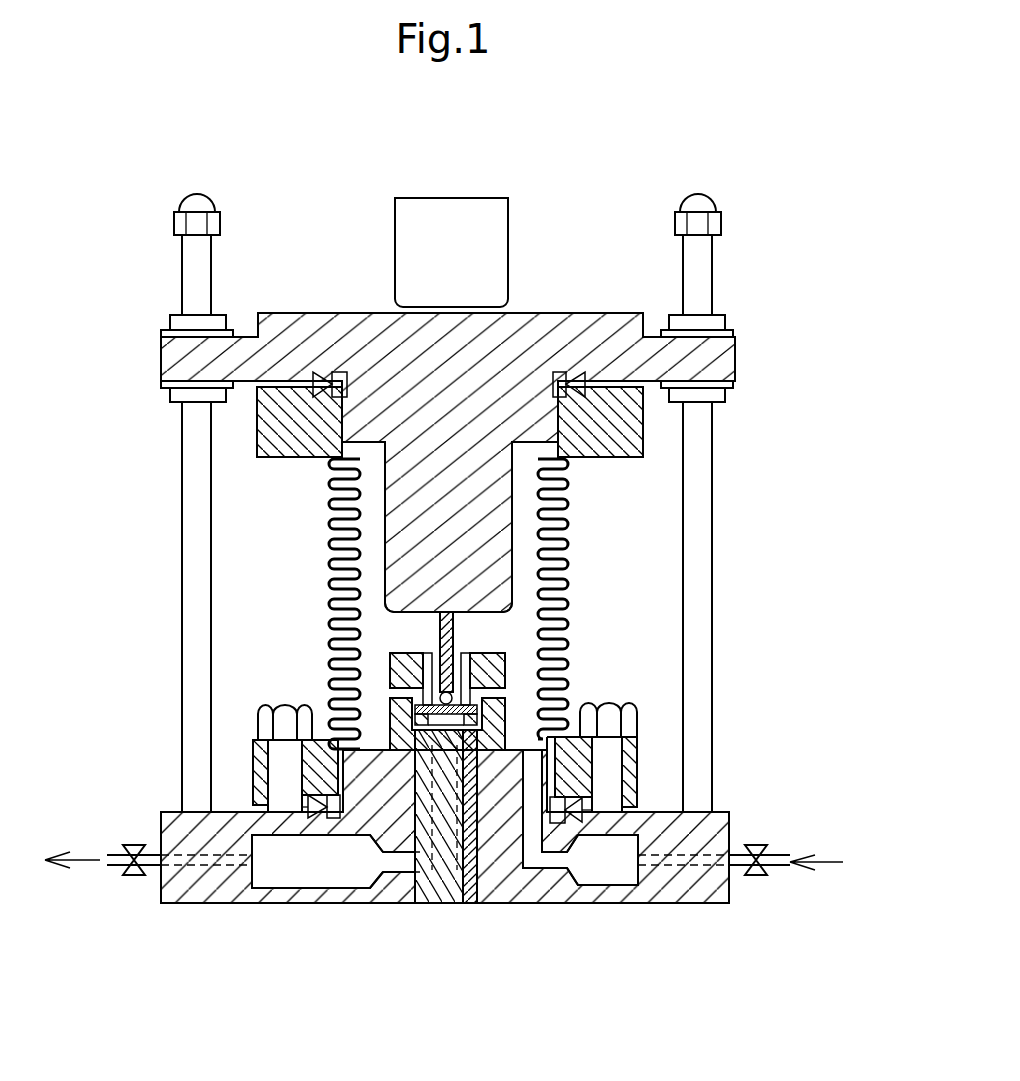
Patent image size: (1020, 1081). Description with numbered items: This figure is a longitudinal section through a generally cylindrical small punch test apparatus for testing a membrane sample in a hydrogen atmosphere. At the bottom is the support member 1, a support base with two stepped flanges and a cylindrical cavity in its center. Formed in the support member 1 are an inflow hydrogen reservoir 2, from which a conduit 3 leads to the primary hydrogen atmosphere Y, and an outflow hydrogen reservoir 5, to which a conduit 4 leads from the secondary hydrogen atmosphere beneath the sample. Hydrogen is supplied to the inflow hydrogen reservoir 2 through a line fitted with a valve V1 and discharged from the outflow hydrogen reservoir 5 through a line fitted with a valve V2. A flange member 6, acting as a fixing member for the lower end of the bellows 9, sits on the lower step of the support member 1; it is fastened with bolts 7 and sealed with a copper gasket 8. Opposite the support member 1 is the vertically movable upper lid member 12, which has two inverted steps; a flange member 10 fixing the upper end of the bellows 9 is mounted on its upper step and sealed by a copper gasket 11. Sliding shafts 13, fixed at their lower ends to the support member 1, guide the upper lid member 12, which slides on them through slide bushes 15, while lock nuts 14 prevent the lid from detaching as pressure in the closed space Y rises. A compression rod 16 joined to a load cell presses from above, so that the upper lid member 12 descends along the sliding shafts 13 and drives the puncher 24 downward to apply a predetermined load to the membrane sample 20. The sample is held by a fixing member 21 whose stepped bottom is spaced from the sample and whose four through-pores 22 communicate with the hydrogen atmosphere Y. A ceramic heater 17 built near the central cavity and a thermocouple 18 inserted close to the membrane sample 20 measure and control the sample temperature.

The support member 1 is at (218, 895).
The inflow hydrogen reservoir 2 is at (608, 887).
The conduit 3 is at (535, 822).
The conduit 4 is at (430, 790).
The outflow hydrogen reservoir 5 is at (286, 880).
The flange member (fixing member) 6 is at (253, 770).
The bolts 7 is at (283, 705).
The gasket 8 is at (340, 820).
The bellows 9 is at (328, 592).
The flange member (fixing member) 10 is at (265, 458).
The gasket 11 is at (342, 372).
The upper lid member 12 is at (183, 358).
The sliding shafts 13 is at (182, 510).
The lock nuts (cap nuts) 14 is at (174, 221).
The slide bushes 15 is at (170, 322).
The compression rod 16 is at (458, 198).
The ceramic heater 17 is at (432, 895).
The thermocouple 18 is at (468, 895).
The membrane sample 20 is at (412, 712).
The fixing member 21 is at (392, 672).
The through-pores 22 is at (433, 665).
The puncher 24 is at (455, 625).
The primary hydrogen atmosphere (closed space) Y is at (570, 610).
The valve V1 is at (758, 878).
The valve V2 is at (133, 876).